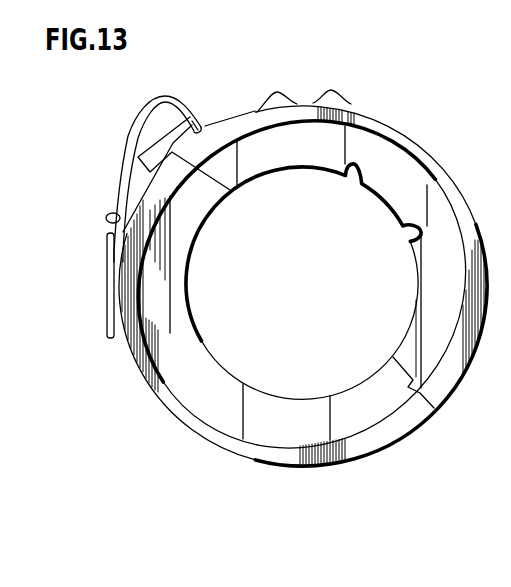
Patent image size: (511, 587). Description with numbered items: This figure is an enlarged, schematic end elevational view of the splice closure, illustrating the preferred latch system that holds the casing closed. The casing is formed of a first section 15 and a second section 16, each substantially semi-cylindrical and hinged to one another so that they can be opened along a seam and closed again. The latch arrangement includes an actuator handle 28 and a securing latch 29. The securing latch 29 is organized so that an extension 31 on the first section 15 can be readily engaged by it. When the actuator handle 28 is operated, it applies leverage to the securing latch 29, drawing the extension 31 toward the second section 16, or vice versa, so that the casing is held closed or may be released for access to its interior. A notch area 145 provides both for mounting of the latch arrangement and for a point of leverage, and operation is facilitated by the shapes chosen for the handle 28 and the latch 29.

The first casing section 15 is at (402, 130).
The second casing section 16 is at (174, 407).
The actuator handle 28 is at (106, 308).
The securing latch 29 is at (138, 113).
The extension 31 is at (202, 116).
The notch area 145 is at (105, 218).